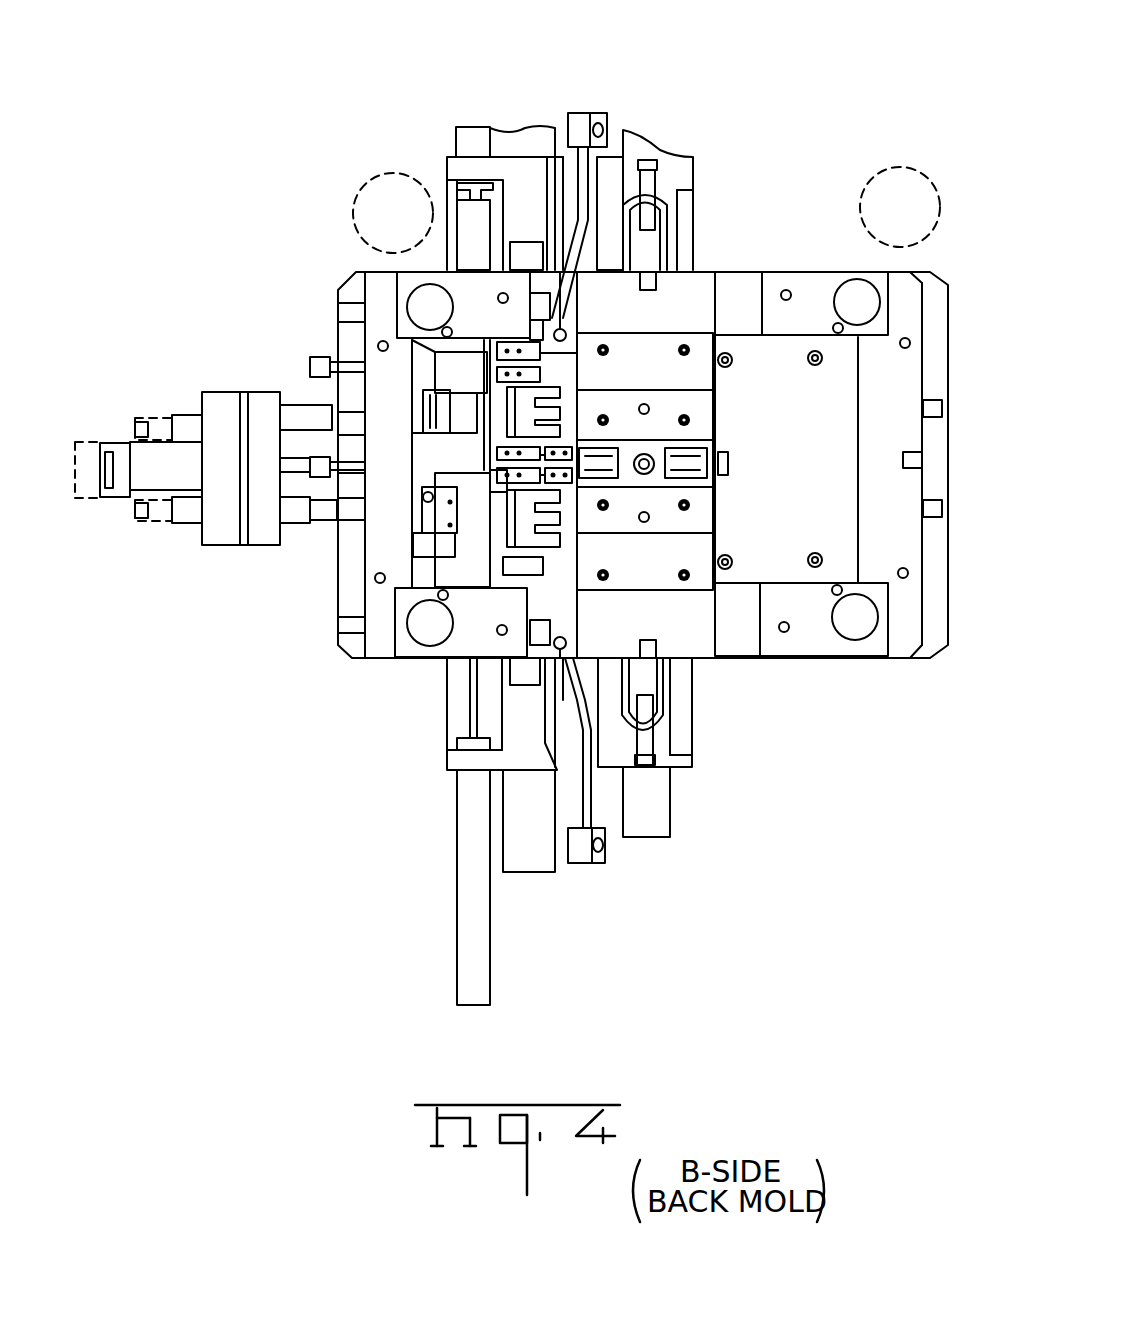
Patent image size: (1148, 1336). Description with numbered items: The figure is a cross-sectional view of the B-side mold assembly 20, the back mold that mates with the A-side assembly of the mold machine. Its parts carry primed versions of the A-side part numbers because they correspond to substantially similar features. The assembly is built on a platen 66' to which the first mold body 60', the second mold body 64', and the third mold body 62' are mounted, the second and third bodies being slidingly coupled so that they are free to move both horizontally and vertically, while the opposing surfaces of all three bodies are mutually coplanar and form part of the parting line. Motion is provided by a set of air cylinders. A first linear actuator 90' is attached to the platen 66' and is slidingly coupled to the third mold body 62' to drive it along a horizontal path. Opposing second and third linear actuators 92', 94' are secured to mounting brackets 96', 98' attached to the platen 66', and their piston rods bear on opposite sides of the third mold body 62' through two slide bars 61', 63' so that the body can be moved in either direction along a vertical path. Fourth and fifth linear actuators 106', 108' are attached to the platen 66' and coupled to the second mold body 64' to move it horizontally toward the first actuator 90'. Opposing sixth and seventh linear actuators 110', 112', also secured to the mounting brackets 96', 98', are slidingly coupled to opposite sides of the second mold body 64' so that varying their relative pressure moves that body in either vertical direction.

The B-side mold assembly 20 is at (786, 122).
The first mold body 60' is at (696, 461).
The slide bar 61' is at (414, 530).
The third mold body 62' is at (359, 417).
The slide bar 63' is at (380, 219).
The second mold body 64' is at (583, 461).
The platen 66' is at (643, 439).
The first linear actuator 90' is at (220, 508).
The second linear actuator 92' is at (401, 912).
The third linear actuator 94' is at (461, 84).
The mounting bracket 96' is at (445, 741).
The mounting bracket 98' is at (440, 179).
The fourth linear actuator 106' is at (660, 794).
The fifth linear actuator 108' is at (650, 175).
The sixth linear actuator 110' is at (562, 867).
The seventh linear actuator 112' is at (548, 84).